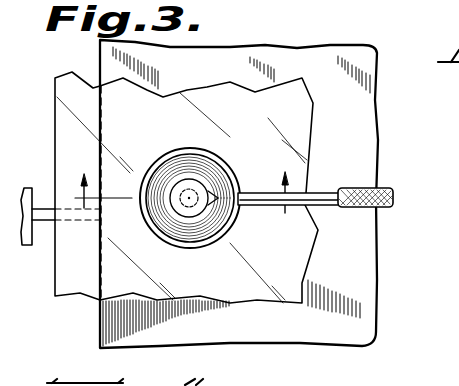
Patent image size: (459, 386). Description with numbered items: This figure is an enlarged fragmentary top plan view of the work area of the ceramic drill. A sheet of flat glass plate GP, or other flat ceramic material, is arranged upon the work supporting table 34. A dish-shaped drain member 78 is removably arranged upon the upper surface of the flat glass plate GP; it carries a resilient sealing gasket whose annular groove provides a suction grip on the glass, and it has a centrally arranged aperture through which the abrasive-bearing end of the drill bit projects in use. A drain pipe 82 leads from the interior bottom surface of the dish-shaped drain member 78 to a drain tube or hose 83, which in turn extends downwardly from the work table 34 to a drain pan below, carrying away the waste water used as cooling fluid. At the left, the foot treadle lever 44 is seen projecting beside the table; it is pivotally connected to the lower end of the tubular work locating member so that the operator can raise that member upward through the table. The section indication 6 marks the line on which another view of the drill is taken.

The work supporting table 34 is at (347, 330).
The flat glass plate GP is at (300, 127).
The foot treadle lever 44 is at (45, 220).
The section line 6- 6 is at (177, 201).
The dish-shaped drain member 78 is at (223, 180).
The drain pipe 82 is at (318, 192).
The drain tube or hose 83 is at (387, 192).